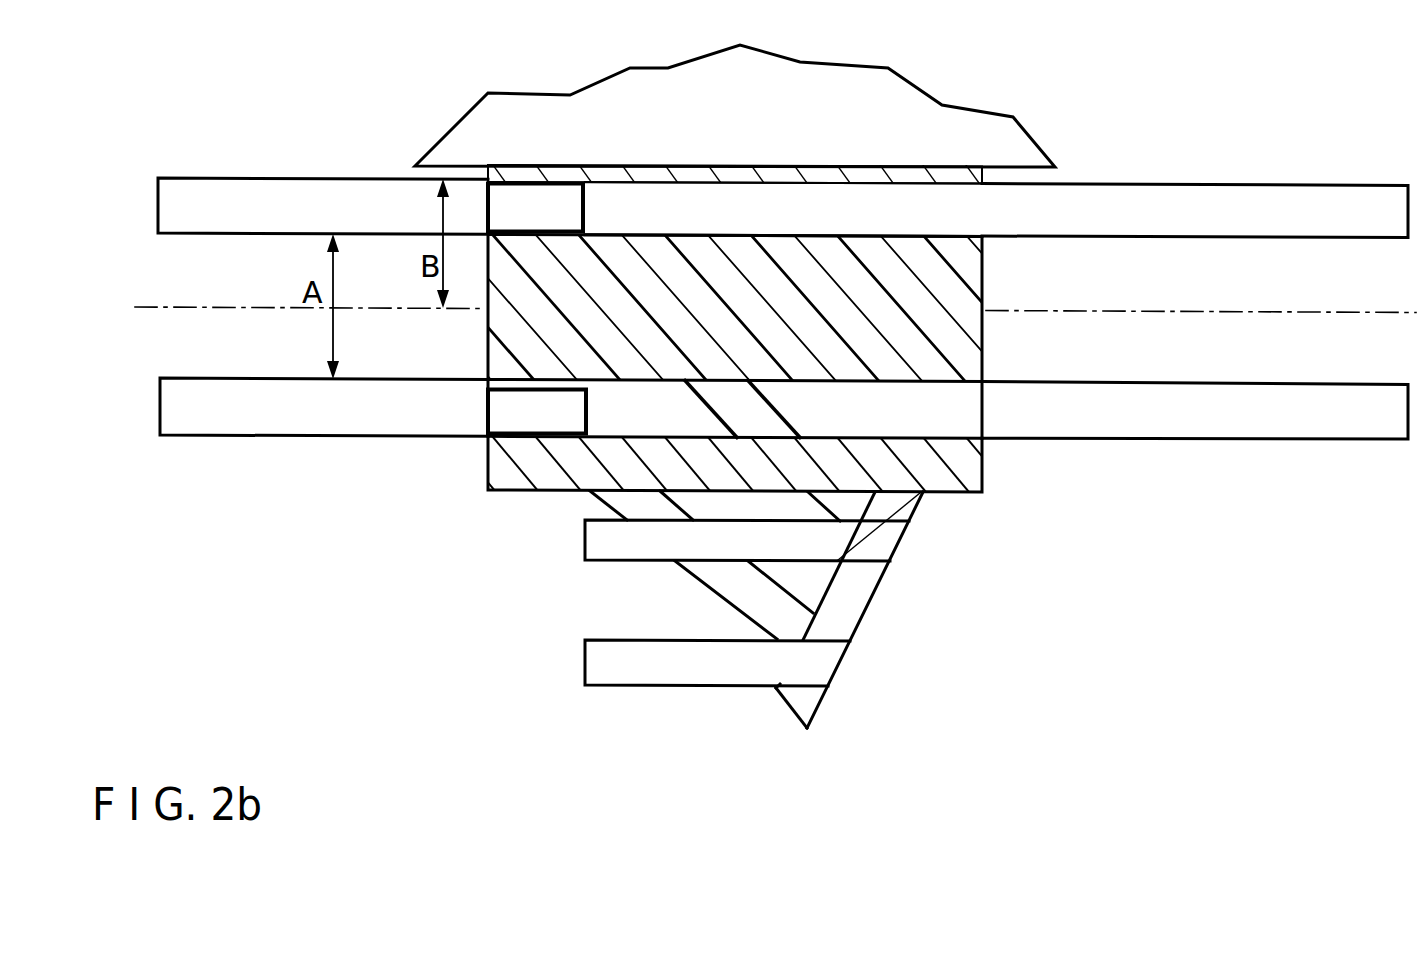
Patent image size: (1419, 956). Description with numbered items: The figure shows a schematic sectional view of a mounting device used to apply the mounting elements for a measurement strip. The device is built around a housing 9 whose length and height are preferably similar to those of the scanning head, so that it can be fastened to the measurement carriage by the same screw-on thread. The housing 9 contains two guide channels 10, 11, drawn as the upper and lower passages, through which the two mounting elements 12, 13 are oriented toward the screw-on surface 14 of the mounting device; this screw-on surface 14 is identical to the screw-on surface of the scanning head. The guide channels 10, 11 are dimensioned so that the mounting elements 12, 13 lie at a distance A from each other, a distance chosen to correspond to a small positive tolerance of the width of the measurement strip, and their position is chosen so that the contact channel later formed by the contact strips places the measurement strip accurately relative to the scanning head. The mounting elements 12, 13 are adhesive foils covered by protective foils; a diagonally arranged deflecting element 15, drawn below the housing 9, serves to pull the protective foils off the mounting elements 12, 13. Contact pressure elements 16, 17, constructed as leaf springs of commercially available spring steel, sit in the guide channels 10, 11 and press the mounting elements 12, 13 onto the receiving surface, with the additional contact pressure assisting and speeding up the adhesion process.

The housing 9 is at (963, 307).
The guide channel 10 is at (930, 197).
The guide channel 11 is at (935, 417).
The mounting element 12 is at (298, 197).
The mounting element 13 is at (297, 402).
The screw-on surface 14 is at (1022, 166).
The deflecting element 15 is at (858, 592).
The contact pressure element 16 is at (533, 203).
The contact pressure element 17 is at (527, 417).